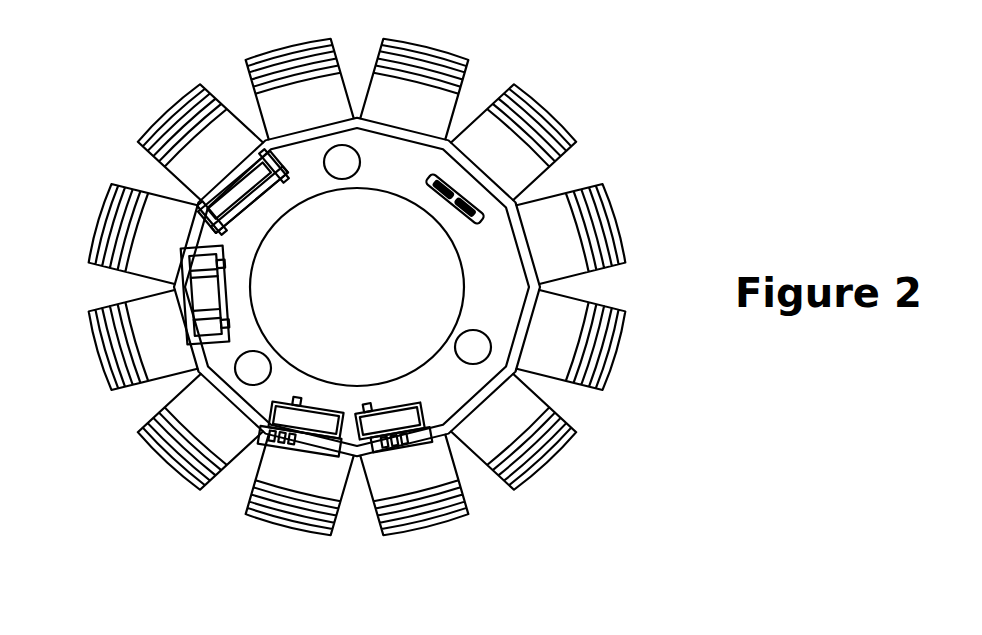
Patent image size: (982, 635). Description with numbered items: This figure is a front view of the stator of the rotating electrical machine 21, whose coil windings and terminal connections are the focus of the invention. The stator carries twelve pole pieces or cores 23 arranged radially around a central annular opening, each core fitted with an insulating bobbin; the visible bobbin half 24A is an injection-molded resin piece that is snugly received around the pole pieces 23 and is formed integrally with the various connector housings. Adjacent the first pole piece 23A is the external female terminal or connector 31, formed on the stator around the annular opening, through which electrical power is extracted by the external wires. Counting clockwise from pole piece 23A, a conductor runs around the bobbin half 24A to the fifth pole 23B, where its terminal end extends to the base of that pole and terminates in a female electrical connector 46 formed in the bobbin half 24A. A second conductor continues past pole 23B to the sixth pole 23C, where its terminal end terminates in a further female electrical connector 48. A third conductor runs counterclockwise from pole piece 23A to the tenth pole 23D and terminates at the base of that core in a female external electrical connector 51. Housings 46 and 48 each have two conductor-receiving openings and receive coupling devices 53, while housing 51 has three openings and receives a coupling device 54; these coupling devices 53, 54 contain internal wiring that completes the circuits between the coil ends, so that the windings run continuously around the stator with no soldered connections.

The rotating electrical machine 21 is at (576, 99).
The pole pieces or cores 23 is at (100, 202).
The pole piece 23A is at (535, 88).
The magnetic pole 23B is at (427, 532).
The pole 23C is at (276, 530).
The pole 23D is at (170, 108).
The bobbin half 24A is at (478, 402).
The terminal or connector 31 is at (537, 183).
The female electrical connector 46 is at (433, 403).
The female electrical connector 48 is at (310, 420).
The female external electrical connector 51 is at (246, 191).
The coupling devices 53 is at (318, 418).
The coupling device 54 is at (263, 202).